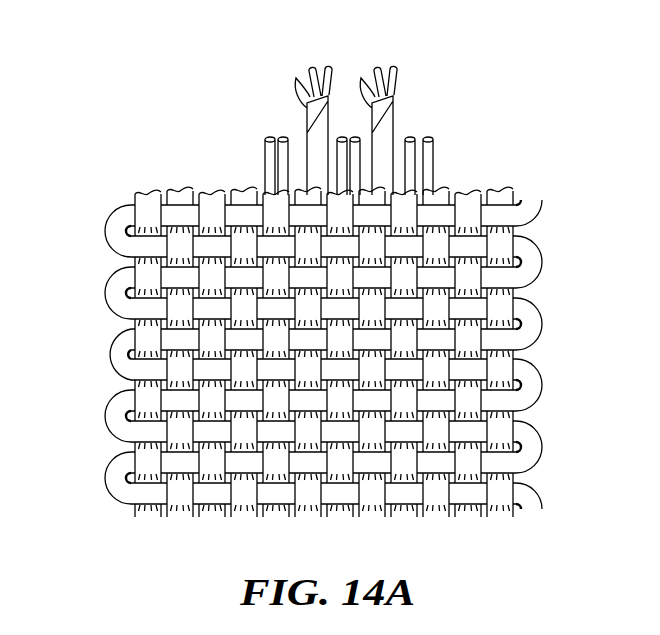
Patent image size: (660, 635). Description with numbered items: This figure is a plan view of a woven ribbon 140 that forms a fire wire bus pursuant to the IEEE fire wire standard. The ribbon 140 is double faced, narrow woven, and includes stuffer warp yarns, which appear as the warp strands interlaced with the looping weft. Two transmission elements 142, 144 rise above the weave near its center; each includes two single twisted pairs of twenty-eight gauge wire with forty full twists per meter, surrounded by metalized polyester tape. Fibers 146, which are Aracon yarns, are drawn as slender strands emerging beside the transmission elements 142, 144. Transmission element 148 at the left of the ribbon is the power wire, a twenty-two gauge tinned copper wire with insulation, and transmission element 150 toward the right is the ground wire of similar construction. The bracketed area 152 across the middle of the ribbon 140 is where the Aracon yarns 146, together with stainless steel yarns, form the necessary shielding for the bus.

The ribbon 140 is at (356, 313).
The transmission element 142 is at (311, 118).
The transmission element 144 is at (386, 111).
The fibers 146 is at (283, 170).
The transmission element 148 is at (182, 191).
The transmission element 150 is at (470, 193).
The area 152 is at (343, 313).